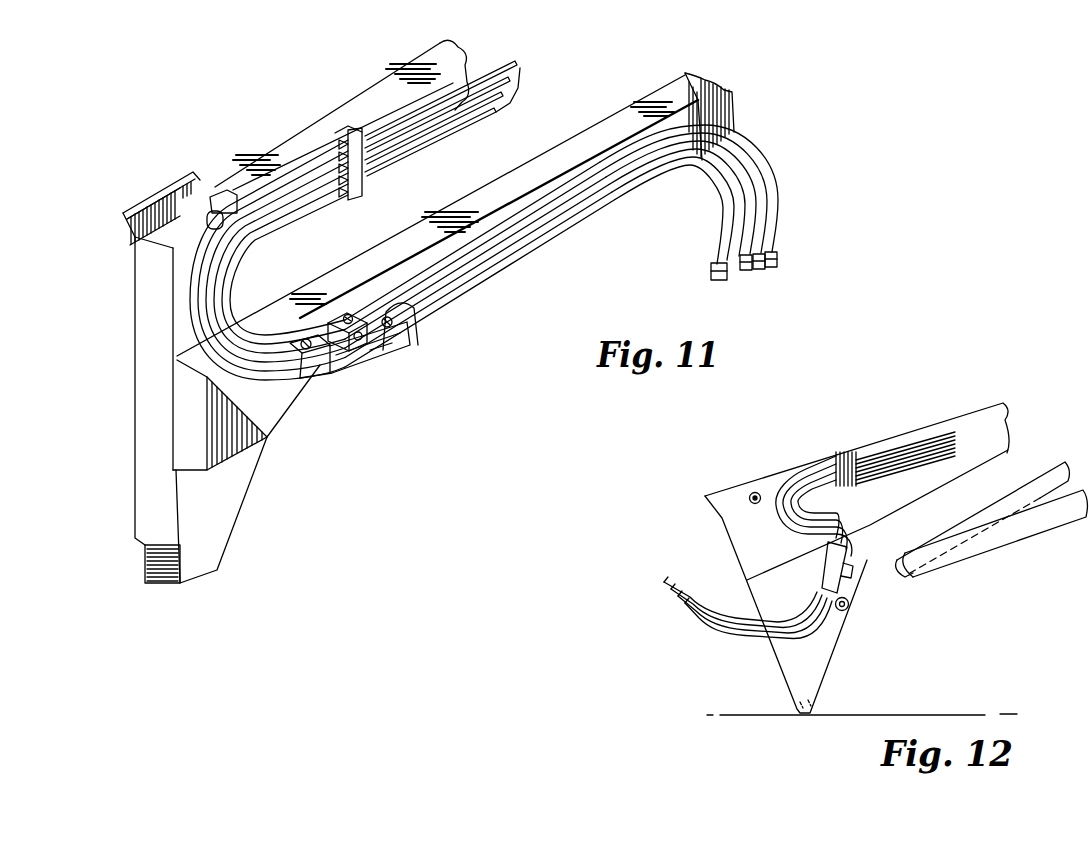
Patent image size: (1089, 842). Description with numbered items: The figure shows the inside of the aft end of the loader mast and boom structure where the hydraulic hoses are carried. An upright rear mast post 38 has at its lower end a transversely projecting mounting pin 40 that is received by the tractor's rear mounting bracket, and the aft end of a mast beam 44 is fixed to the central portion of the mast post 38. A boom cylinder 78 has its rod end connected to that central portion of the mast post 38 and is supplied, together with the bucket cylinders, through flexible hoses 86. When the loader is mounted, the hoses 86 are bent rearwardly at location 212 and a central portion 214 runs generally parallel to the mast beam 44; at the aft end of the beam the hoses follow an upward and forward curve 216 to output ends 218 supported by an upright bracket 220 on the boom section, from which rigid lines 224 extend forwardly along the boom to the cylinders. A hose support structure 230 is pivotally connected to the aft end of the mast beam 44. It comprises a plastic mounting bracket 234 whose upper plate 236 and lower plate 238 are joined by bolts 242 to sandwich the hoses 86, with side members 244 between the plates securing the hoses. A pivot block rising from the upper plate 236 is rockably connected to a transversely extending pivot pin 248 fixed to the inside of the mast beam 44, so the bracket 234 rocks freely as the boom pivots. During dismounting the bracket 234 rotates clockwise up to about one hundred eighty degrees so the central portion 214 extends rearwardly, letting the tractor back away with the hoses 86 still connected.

In FIG. 11, the rear mast post 38 is at (134, 362).
In FIG. 12, the rear mast post 38 is at (828, 654).
In FIG. 12, the mounting pin 40 is at (827, 691).
In FIG. 11, the mast beam 44 is at (517, 181).
In FIG. 12, the mast beam 44 is at (1043, 525).
In FIG. 12, the boom cylinder 78 is at (1021, 480).
In FIG. 11, the flexible hoses 86 is at (620, 157).
In FIG. 12, the flexible hoses 86 is at (683, 590).
In FIG. 11, the bend location 212 is at (746, 154).
In FIG. 11, the central portion of hoses 214 is at (562, 232).
In FIG. 12, the central portion of hoses 214 is at (696, 623).
In FIG. 11, the hose bend 216 is at (230, 292).
In FIG. 12, the hose bend 216 is at (771, 519).
In FIG. 11, the output ends of hoses 218 is at (359, 185).
In FIG. 11, the upright bracket 220 is at (350, 128).
In FIG. 12, the upright bracket 220 is at (846, 486).
In FIG. 11, the rigid lines 224 is at (508, 73).
In FIG. 11, the hose support structure 230 is at (386, 306).
In FIG. 12, the hose support structure 230 is at (866, 530).
In FIG. 11, the mounting bracket 234 is at (305, 372).
In FIG. 11, the upper plate 236 is at (318, 322).
In FIG. 11, the lower plate 238 is at (356, 368).
In FIG. 11, the bolts 242 is at (400, 325).
In FIG. 11, the side members 244 is at (373, 358).
In FIG. 11, the pivot pin 248 is at (376, 350).
In FIG. 12, the pivot pin 248 is at (855, 575).